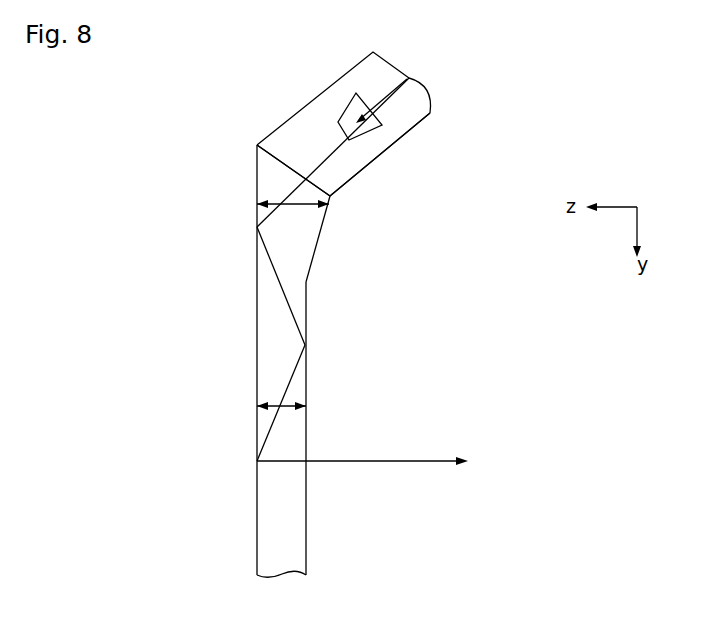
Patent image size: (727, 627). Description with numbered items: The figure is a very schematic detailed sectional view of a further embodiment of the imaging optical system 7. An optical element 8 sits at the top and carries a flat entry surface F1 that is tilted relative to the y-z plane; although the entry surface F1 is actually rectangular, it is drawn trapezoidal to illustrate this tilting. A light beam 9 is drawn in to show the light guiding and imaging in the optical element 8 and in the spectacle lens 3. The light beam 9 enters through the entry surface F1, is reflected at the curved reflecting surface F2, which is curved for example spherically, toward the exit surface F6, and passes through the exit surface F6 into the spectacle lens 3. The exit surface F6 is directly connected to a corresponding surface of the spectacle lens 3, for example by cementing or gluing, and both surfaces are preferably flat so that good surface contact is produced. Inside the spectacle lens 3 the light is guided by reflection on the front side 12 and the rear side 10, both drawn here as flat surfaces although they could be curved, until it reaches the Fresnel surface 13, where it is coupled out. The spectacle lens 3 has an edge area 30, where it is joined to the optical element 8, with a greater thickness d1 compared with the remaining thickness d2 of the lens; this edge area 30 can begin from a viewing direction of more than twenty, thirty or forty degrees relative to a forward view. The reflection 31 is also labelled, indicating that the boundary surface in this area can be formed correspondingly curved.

The imaging optical system 7 is at (265, 137).
The optical element 8 is at (367, 170).
The edge area 30 is at (320, 243).
The reflection 31 is at (255, 226).
The spectacle lens 3 is at (257, 375).
The Fresnel surface 13 is at (255, 458).
The front side 12 is at (256, 555).
The rear side 10 is at (307, 500).
The light beam 9 is at (413, 463).
The entry surface F1 is at (373, 130).
The curved reflecting surface F2 is at (427, 102).
The exit surface F6 is at (272, 159).
The greater thickness d1 is at (302, 200).
The remaining thickness d2 is at (277, 403).